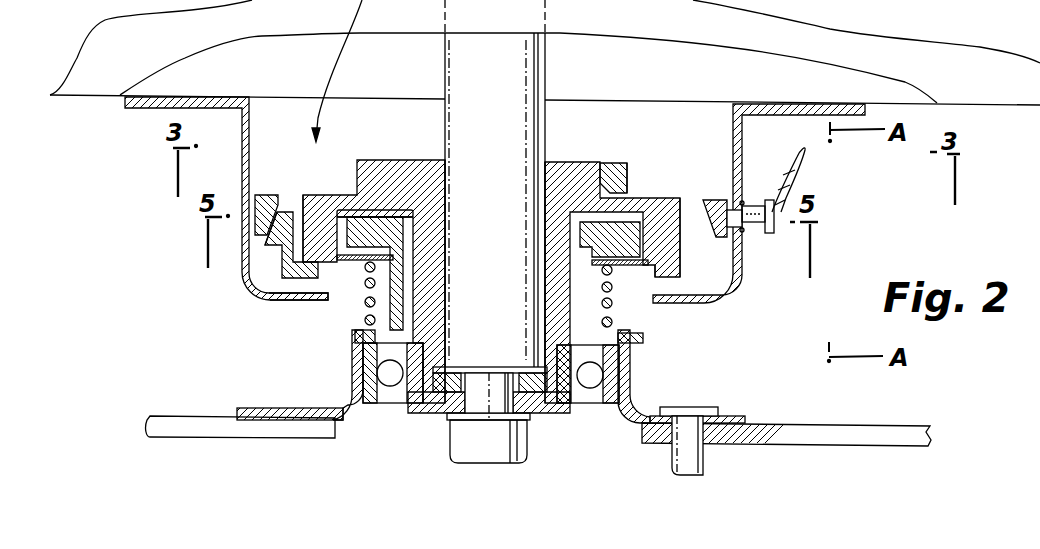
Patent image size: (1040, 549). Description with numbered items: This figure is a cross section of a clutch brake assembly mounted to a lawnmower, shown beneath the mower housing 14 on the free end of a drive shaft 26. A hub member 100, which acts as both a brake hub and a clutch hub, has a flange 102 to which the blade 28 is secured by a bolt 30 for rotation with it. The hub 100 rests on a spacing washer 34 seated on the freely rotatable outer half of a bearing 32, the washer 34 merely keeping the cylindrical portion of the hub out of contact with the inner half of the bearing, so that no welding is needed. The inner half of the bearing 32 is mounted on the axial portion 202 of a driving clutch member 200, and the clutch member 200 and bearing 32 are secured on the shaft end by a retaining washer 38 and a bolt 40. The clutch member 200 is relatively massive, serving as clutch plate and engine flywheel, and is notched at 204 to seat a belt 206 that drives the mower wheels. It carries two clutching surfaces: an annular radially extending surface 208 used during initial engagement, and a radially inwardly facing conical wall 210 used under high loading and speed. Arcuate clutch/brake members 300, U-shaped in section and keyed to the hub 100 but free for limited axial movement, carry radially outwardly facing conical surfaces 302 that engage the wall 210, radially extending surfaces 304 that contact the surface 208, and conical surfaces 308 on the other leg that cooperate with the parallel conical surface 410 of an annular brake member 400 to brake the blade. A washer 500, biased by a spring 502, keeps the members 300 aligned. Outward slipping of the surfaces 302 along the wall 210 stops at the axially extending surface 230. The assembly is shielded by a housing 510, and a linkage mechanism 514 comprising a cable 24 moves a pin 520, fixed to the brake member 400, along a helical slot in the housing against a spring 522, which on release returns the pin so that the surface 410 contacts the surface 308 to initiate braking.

The housing 14 is at (97, 97).
The cable 24 is at (805, 152).
The drive shaft 26 is at (525, 73).
The blade 28 is at (202, 428).
The bolt 30 is at (683, 462).
The bearing 32 is at (384, 415).
The spacing washer 34 is at (370, 330).
The retaining washer 38 is at (547, 415).
The bolt 40 is at (483, 453).
The hub member 100 is at (350, 368).
The flange 102 is at (270, 413).
The driving clutch member 200 is at (422, 183).
The axial portion 202 is at (433, 287).
The notch 204 is at (602, 182).
The belt 206 is at (627, 173).
The annular radially extending surface 208 is at (385, 208).
The radially inwardly facing conical wall 210 is at (328, 230).
The axially extending surface 230 is at (667, 257).
The arcuate clutch/brake member 300 is at (328, 277).
The radially outwardly facing conical surface 302 is at (313, 245).
The radially extending surface 304 is at (667, 253).
The conical surface 308 is at (257, 235).
The annular brake member 400 is at (267, 197).
The conical surface 410 is at (277, 240).
The washer 500 is at (637, 267).
The spring 502 is at (628, 320).
The housing 510 is at (703, 305).
The linkage mechanism 514 is at (756, 193).
The pin 520 is at (773, 227).
The spring 522 is at (743, 232).